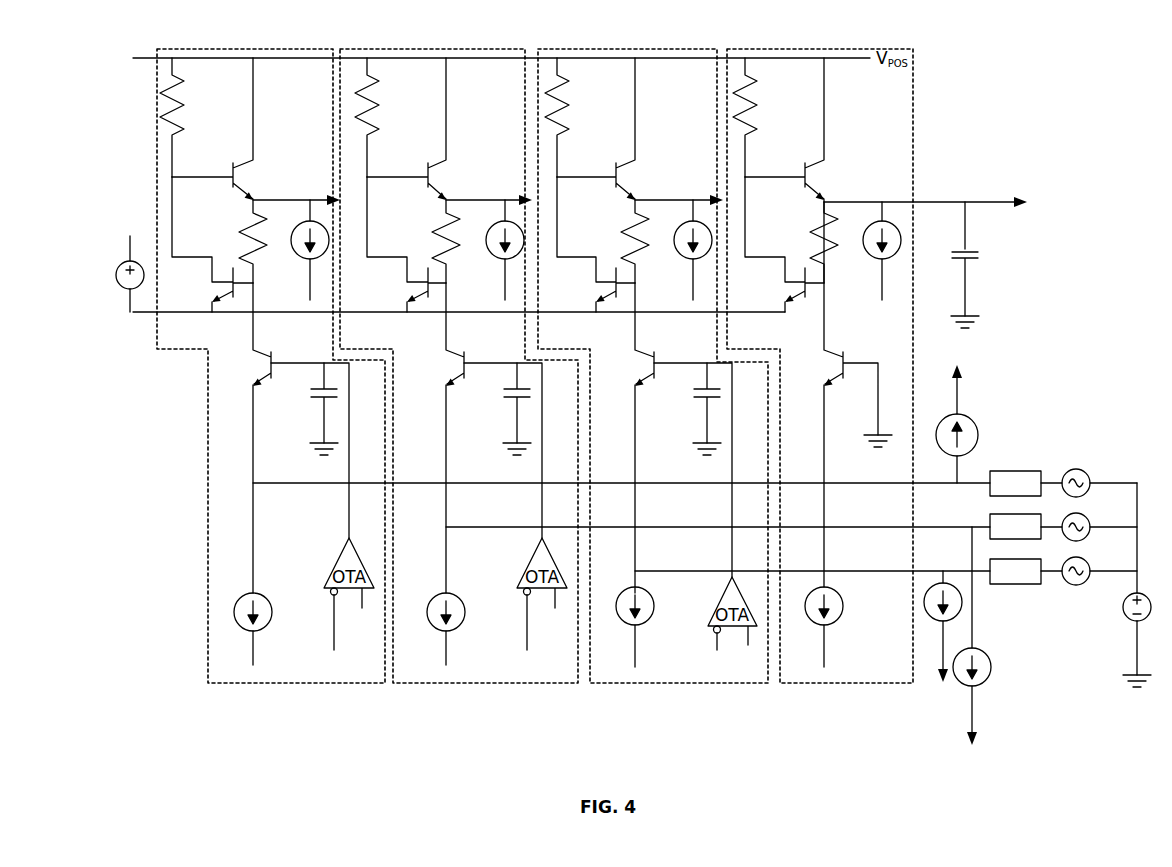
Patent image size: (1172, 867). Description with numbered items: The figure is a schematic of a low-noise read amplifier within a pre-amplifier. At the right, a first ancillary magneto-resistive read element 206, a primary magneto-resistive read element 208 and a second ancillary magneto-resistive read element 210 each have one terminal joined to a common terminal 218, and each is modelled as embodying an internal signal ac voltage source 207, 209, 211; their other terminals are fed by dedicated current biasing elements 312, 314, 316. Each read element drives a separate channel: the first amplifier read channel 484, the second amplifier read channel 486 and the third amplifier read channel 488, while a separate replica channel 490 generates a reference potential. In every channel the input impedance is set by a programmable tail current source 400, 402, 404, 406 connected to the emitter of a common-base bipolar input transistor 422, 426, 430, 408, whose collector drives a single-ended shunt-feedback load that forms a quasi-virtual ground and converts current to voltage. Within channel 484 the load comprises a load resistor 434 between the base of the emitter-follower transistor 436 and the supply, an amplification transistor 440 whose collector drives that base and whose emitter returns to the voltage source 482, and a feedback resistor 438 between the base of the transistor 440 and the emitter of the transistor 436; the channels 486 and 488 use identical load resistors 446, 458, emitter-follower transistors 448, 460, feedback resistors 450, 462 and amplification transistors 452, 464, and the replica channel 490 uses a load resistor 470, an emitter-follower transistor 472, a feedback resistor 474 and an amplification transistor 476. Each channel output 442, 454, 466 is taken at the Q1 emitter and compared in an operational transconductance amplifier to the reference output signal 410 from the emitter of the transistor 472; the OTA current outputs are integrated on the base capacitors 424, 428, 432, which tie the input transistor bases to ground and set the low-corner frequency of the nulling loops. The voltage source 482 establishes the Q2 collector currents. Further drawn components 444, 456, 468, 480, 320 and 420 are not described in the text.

The first ancillary magneto-resistive read element 206 is at (1012, 470).
The first signal ac voltage source 207 is at (1072, 470).
The primary magneto-resistive read element 208 is at (1028, 514).
The signal ac voltage source 209 is at (1067, 537).
The second ancillary magneto-resistive read element 210 is at (1022, 586).
The signal ac voltage source 211 is at (1082, 586).
The common terminal 218 is at (1136, 480).
The current biasing element 312 is at (976, 414).
The current biasing element 314 is at (934, 628).
The current biasing element 316 is at (992, 660).
The common voltage source 320 is at (1122, 605).
The programmable tail current source 400 is at (250, 634).
The programmable tail current source 402 is at (446, 634).
The programmable tail current source 404 is at (633, 628).
The programmable tail current source 406 is at (836, 626).
The bipolar input transistor 408 is at (836, 380).
The reference output signal 410 is at (1012, 200).
The output capacitor 420 is at (978, 254).
The bipolar input transistor 422 is at (272, 359).
The base capacitor 424 is at (320, 394).
The bipolar input transistor 426 is at (465, 359).
The base capacitor 428 is at (513, 394).
The bipolar input transistor 430 is at (655, 358).
The base capacitor 432 is at (700, 394).
The load resistor 434 is at (186, 86).
The emitter-follower transistor 436 is at (232, 166).
The feedback resistor 438 is at (242, 224).
The amplification transistor 440 is at (216, 290).
The first signal output 442 is at (320, 196).
The current source 444 is at (300, 260).
The load resistor 446 is at (381, 86).
The emitter-follower transistor 448 is at (427, 166).
The feedback resistor 450 is at (437, 224).
The amplification transistor 452 is at (413, 290).
The output 454 is at (515, 196).
The current source 456 is at (495, 260).
The load resistor 458 is at (571, 86).
The emitter-follower transistor 460 is at (615, 166).
The feedback resistor 462 is at (627, 224).
The amplification transistor 464 is at (603, 290).
The output 466 is at (705, 196).
The current source 468 is at (685, 260).
The load resistor 470 is at (759, 86).
The emitter-follower transistor 472 is at (803, 166).
The feedback resistor 474 is at (815, 224).
The amplification transistor 476 is at (791, 290).
The current source 480 is at (882, 262).
The voltage source 482 is at (118, 272).
The first amplifier read channel 484 is at (262, 48).
The second amplifier read channel 486 is at (450, 48).
The third amplifier read channel 488 is at (629, 48).
The replica channel 490 is at (819, 48).